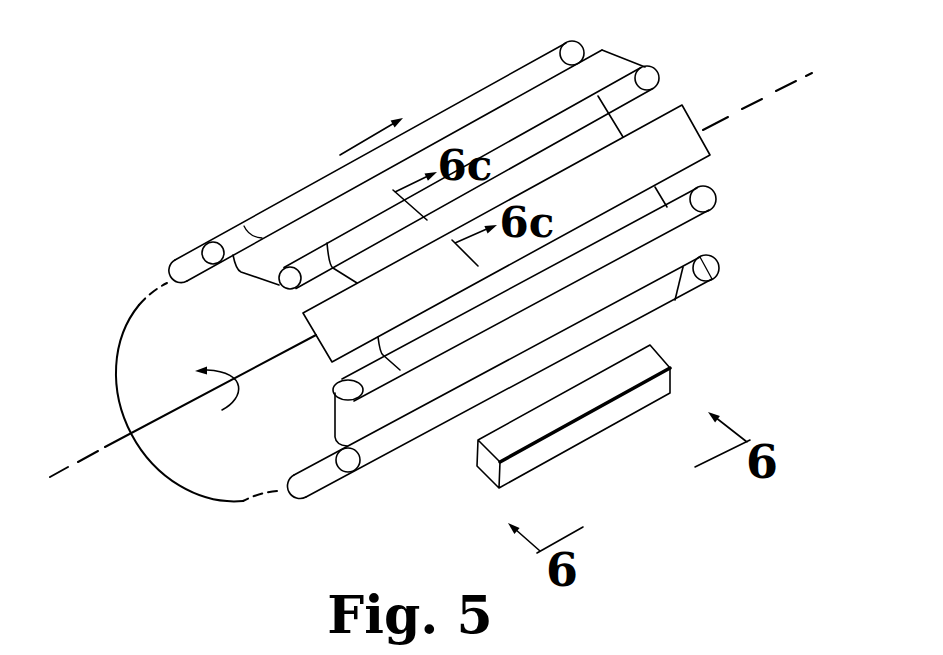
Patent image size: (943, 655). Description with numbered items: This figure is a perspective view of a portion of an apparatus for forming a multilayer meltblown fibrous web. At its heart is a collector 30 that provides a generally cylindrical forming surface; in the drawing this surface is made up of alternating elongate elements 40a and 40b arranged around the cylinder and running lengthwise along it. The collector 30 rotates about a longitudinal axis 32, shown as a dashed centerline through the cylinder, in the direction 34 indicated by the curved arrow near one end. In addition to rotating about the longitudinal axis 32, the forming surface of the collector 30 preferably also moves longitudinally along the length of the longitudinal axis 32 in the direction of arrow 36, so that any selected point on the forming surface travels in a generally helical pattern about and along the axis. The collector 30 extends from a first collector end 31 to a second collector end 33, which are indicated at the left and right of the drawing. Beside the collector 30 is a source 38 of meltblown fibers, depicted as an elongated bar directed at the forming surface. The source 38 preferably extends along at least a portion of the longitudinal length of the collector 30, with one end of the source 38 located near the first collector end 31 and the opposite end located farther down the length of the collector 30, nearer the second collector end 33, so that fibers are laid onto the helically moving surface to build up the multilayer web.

The collector 30 is at (110, 288).
The first collector end 31 is at (172, 510).
The longitudinal axis 32 is at (60, 470).
The second collector end 33 is at (730, 284).
The direction of rotation 34 is at (233, 375).
The direction of longitudinal movement 36 is at (362, 140).
The source of meltblown fibers 38 is at (485, 462).
The rod elements 40a is at (195, 260).
The bar elements 40b is at (543, 78).